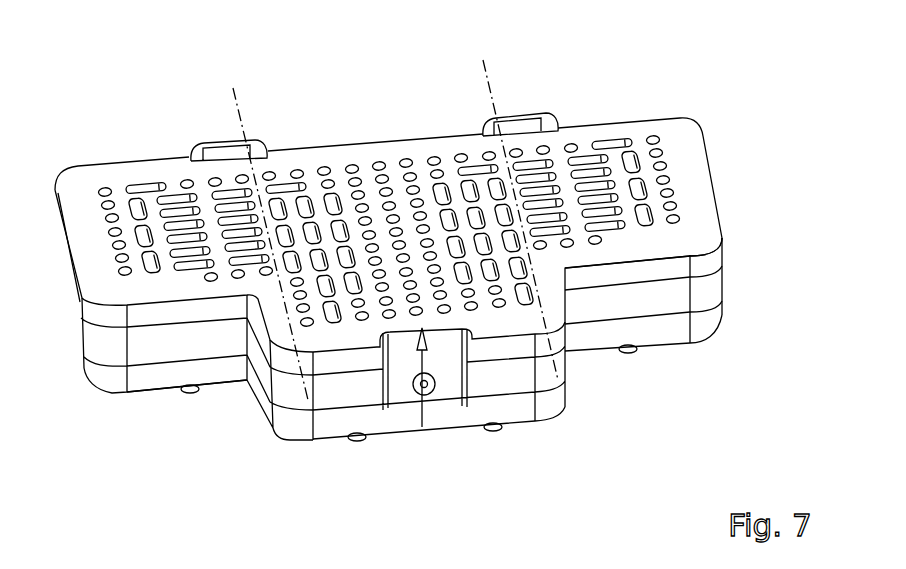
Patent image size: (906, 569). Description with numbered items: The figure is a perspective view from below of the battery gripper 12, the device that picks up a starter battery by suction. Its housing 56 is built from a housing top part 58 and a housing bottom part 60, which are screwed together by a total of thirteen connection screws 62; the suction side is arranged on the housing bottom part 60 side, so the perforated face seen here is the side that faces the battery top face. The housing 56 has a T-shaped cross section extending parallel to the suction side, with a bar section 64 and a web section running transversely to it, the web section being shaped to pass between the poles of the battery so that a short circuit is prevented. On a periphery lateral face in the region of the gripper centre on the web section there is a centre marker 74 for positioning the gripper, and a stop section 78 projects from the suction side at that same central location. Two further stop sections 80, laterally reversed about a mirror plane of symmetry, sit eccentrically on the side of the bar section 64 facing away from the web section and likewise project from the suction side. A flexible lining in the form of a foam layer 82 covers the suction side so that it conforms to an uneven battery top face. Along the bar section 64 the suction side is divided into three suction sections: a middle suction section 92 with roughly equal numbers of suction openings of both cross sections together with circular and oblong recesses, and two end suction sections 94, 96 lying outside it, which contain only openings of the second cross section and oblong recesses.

The battery gripper 12 is at (727, 40).
The housing 56 is at (673, 330).
The housing top part 58 is at (718, 322).
The housing bottom part 60 is at (715, 280).
The connection screws 62 is at (190, 393).
The bar section 64 is at (650, 125).
The centre marker 74 is at (417, 363).
The stop section 78 is at (433, 334).
The stop sections 80 is at (226, 146).
The foam layer 82 is at (720, 258).
The middle suction section 92 is at (494, 104).
The end suction section 94 is at (234, 90).
The end suction section 96 is at (670, 39).